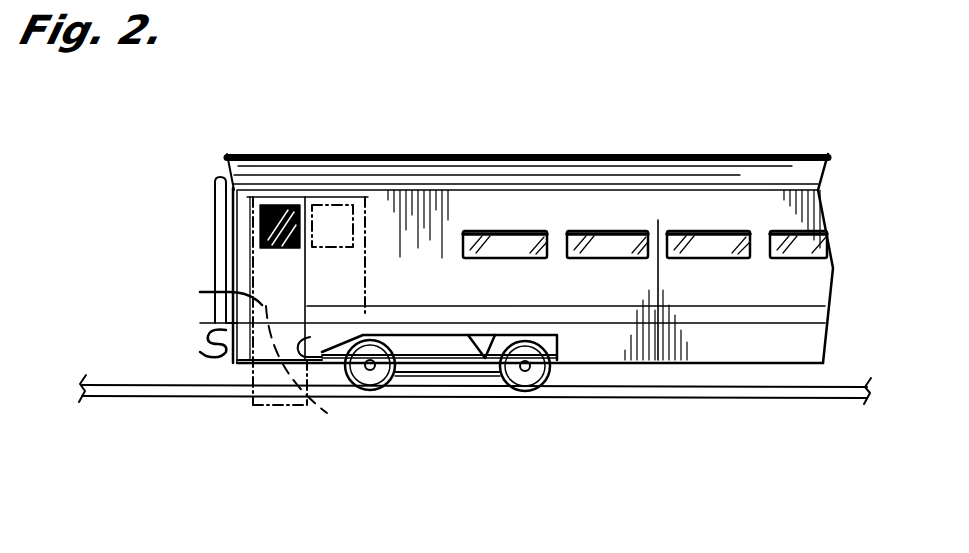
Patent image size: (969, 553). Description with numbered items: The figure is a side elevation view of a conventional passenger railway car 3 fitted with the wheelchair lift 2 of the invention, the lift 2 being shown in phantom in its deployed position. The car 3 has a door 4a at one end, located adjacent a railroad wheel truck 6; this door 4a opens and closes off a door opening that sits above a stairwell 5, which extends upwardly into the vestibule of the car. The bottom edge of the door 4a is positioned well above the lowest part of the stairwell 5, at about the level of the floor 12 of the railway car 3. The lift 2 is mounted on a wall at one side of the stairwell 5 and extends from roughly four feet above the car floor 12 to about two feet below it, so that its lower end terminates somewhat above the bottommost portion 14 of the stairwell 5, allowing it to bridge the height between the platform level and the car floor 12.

The wheelchair lift 2 is at (242, 407).
The passenger railway car 3 is at (645, 155).
The door 4a is at (340, 205).
The stairwell 5 is at (327, 405).
The railroad wheel truck 6 is at (380, 393).
The floor 12 is at (200, 292).
The bottommost portion 14 is at (210, 340).